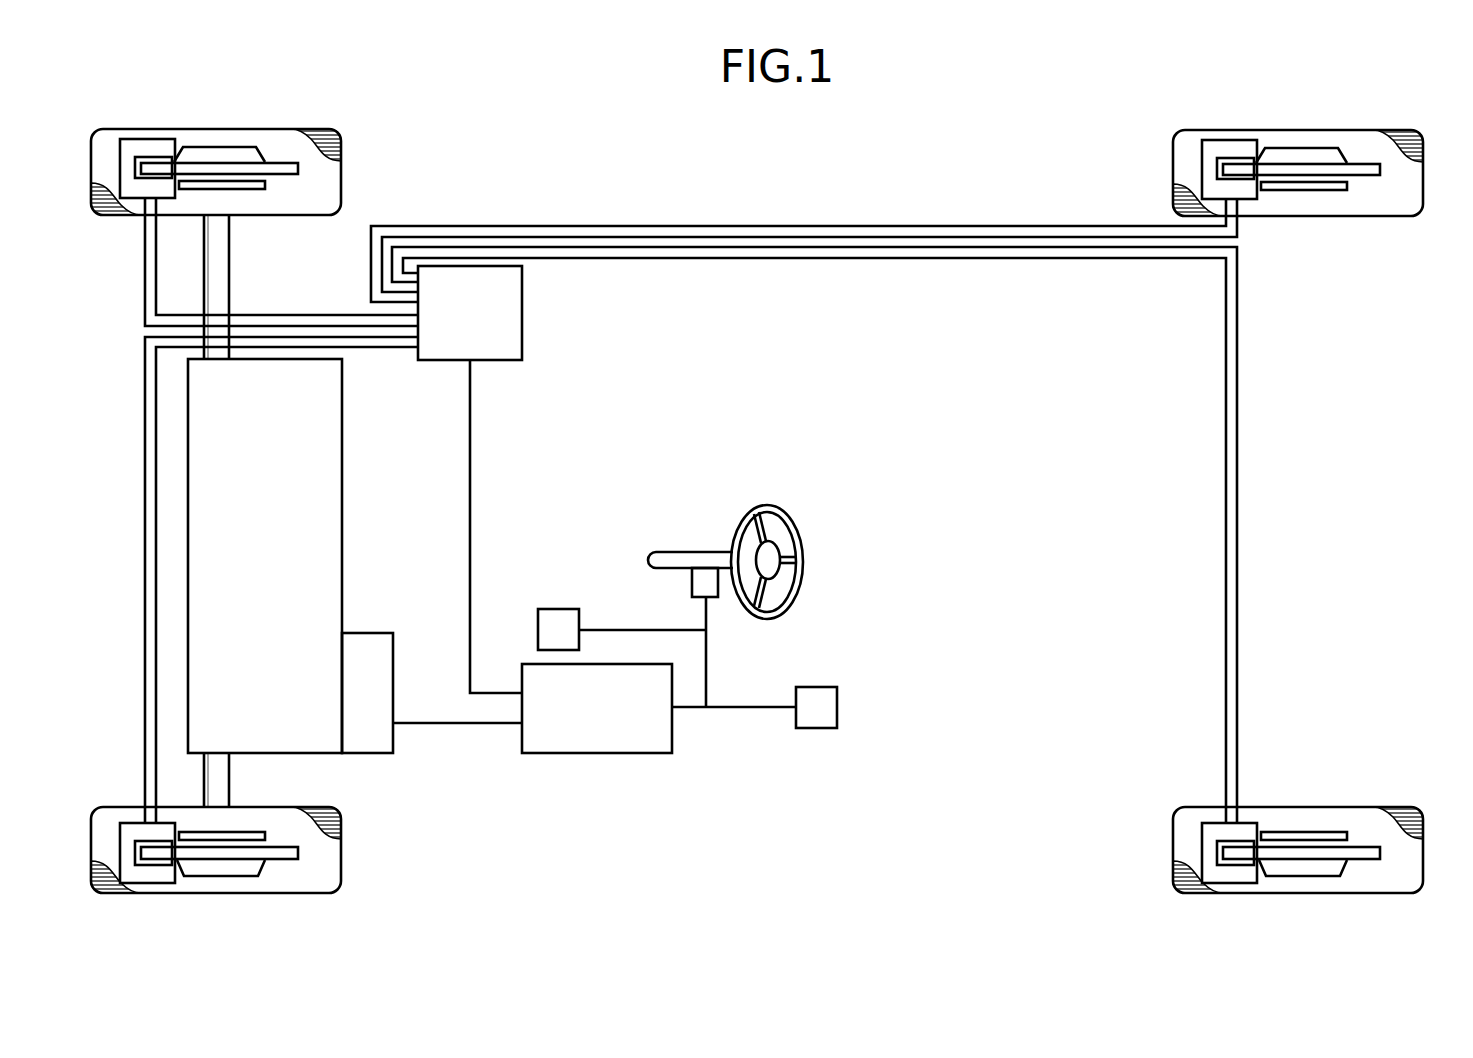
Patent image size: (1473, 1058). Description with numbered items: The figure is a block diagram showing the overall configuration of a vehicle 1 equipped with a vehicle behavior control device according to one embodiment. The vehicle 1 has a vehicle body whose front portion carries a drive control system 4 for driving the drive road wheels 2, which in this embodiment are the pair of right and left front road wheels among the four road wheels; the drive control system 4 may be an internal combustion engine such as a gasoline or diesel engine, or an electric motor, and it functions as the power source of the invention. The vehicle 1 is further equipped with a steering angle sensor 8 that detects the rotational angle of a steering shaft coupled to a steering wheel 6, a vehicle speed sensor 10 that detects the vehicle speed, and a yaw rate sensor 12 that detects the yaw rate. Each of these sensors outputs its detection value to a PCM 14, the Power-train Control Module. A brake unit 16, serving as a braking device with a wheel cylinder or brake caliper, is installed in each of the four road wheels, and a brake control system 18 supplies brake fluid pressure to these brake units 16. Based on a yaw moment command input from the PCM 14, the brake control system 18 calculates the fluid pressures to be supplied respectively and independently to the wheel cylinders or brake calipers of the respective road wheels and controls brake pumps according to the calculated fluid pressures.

The vehicle 1 is at (1414, 669).
The drive road wheels 2 is at (300, 128).
The drive control system 4 is at (342, 392).
The steering wheel 6 is at (768, 505).
The steering angle sensor 8 is at (690, 584).
The vehicle speed sensor 10 is at (560, 607).
The yaw rate sensor 12 is at (830, 686).
The PCM 14 is at (655, 755).
The brake unit 16 is at (152, 138).
The brake control system 18 is at (517, 362).